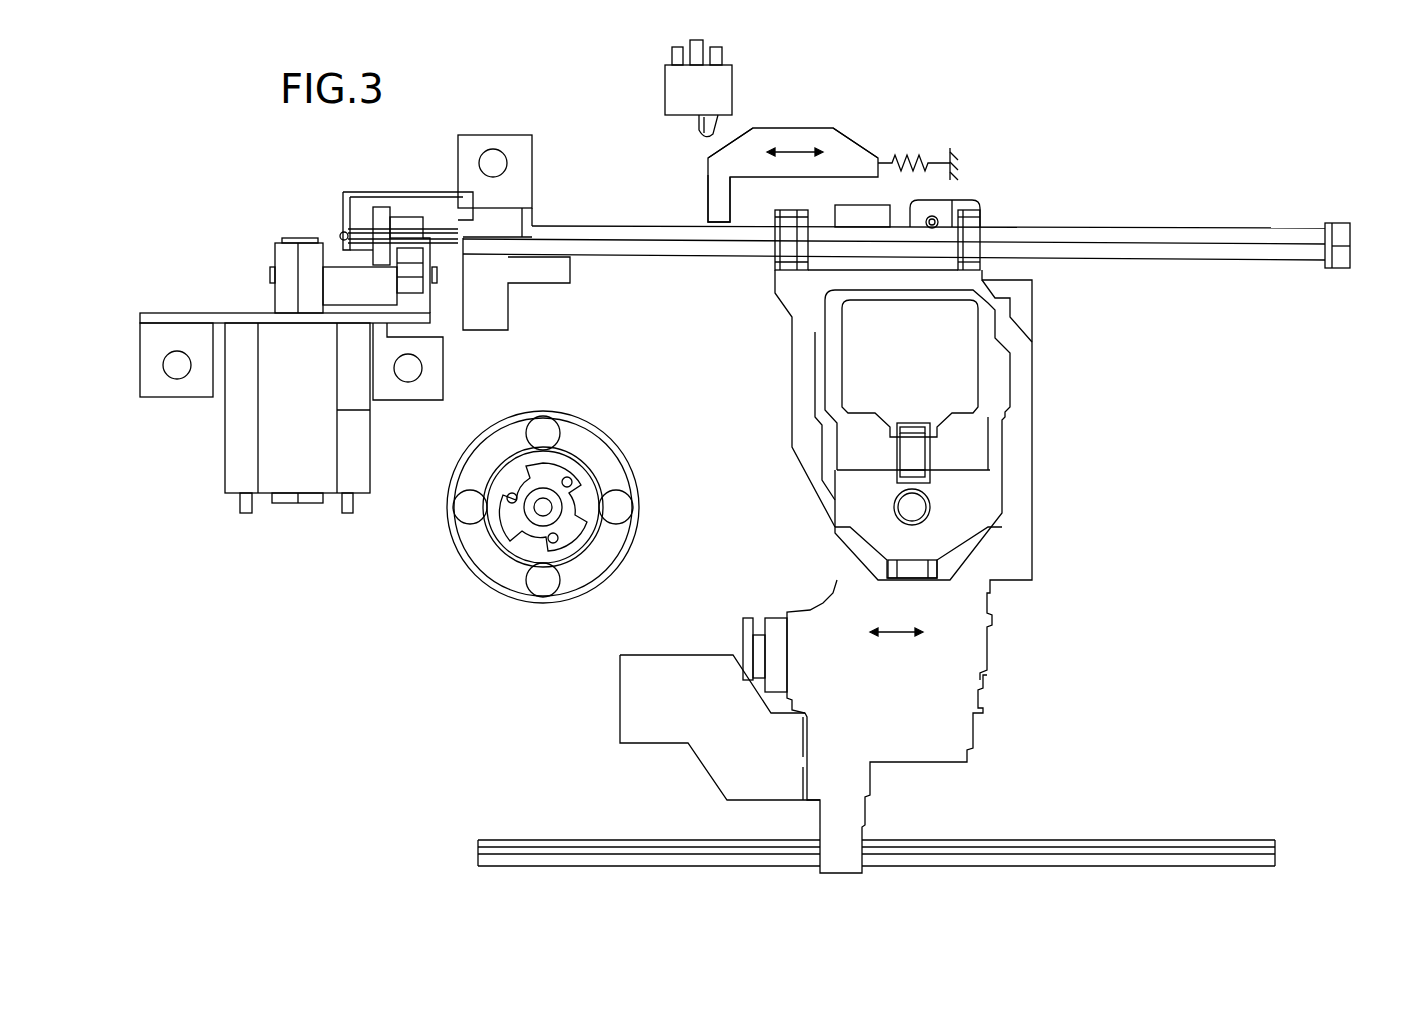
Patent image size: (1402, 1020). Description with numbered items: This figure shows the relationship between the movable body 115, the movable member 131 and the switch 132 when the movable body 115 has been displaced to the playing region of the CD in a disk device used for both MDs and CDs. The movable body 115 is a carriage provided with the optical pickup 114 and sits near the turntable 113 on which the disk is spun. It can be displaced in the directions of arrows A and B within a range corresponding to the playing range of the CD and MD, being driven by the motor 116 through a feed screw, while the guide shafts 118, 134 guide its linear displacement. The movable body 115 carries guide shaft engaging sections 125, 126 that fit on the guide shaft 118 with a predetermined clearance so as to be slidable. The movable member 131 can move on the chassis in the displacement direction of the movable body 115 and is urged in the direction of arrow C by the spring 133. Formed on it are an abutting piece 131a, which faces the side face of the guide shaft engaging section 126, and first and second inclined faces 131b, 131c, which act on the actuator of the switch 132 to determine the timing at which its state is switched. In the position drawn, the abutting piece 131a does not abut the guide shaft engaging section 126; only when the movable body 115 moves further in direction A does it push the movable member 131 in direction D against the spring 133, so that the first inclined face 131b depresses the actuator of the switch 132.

The turntable 113 is at (503, 597).
The optical pickup 114 is at (923, 508).
The movable body 115 is at (987, 655).
The motor 116 is at (327, 495).
The guide shaft 118 is at (1148, 232).
The guide shaft engaging section 125 is at (975, 238).
The guide shaft engaging section 126 is at (780, 245).
The movable member 131 is at (807, 115).
The abutting piece 131a is at (717, 203).
The first inclined face 131b is at (708, 147).
The second inclined face 131c is at (867, 128).
The switch 132 is at (665, 73).
The spring 133 is at (920, 145).
The guide shaft 134 is at (1050, 845).